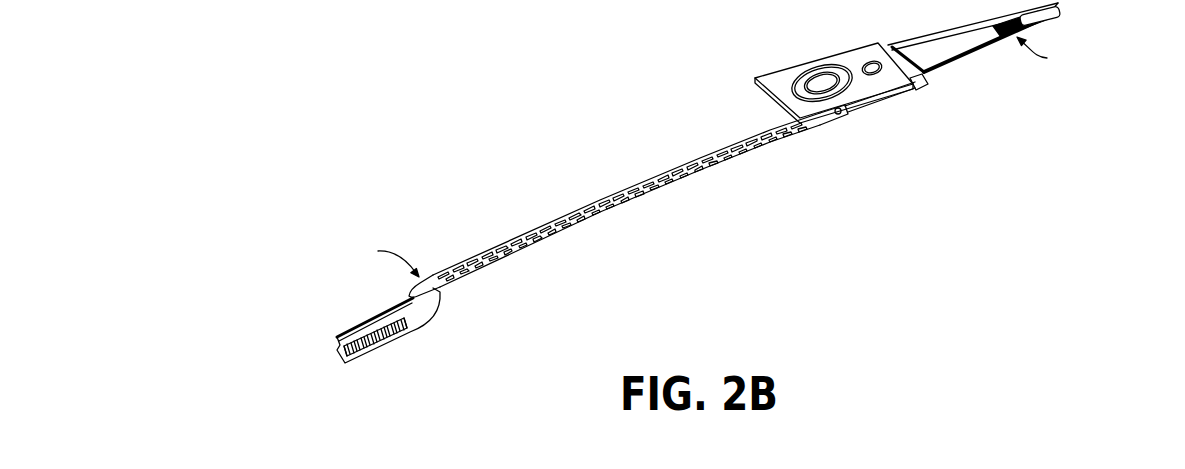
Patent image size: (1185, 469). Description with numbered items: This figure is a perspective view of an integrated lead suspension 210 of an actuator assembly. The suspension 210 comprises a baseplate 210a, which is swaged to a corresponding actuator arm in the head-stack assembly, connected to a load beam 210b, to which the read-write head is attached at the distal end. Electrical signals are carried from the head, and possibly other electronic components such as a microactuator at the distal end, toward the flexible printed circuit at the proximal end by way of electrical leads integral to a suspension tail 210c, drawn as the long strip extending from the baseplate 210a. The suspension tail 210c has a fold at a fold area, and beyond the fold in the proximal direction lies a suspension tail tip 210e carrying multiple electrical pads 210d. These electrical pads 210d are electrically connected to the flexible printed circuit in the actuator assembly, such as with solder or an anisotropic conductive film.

The suspension 210 is at (364, 127).
The baseplate 210a is at (841, 58).
The load beam 210b is at (925, 44).
The suspension tail 210c is at (603, 211).
The electrical pads 210d is at (384, 344).
The suspension tail tip 210e is at (360, 324).